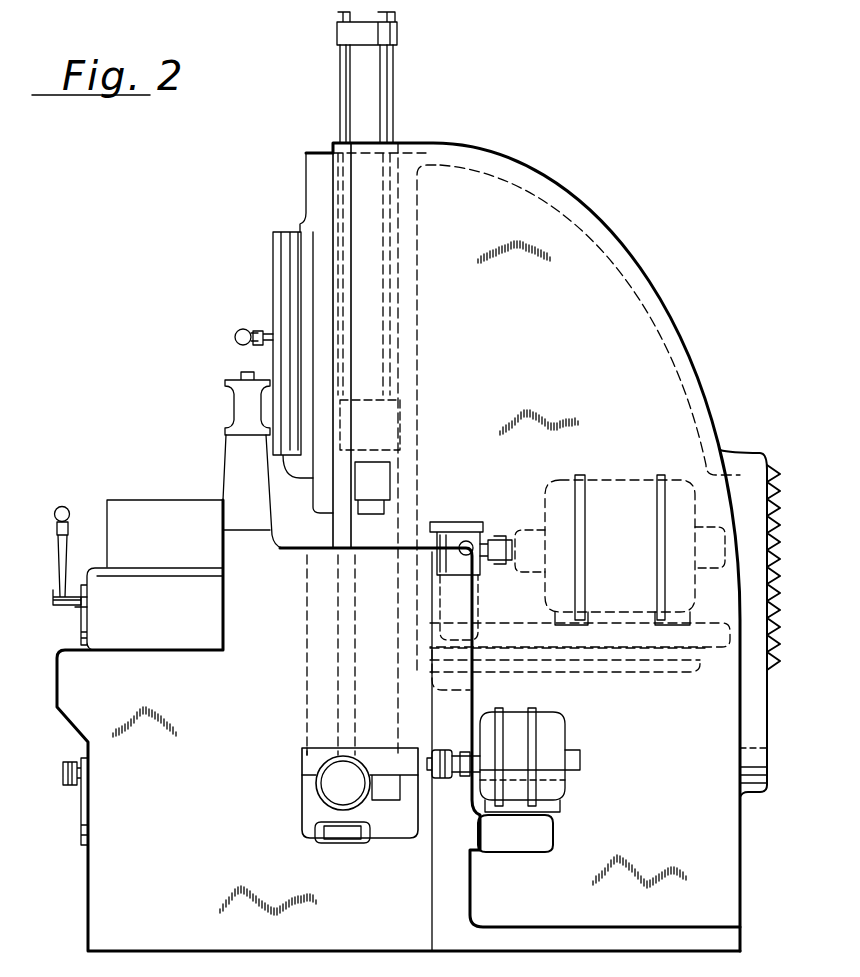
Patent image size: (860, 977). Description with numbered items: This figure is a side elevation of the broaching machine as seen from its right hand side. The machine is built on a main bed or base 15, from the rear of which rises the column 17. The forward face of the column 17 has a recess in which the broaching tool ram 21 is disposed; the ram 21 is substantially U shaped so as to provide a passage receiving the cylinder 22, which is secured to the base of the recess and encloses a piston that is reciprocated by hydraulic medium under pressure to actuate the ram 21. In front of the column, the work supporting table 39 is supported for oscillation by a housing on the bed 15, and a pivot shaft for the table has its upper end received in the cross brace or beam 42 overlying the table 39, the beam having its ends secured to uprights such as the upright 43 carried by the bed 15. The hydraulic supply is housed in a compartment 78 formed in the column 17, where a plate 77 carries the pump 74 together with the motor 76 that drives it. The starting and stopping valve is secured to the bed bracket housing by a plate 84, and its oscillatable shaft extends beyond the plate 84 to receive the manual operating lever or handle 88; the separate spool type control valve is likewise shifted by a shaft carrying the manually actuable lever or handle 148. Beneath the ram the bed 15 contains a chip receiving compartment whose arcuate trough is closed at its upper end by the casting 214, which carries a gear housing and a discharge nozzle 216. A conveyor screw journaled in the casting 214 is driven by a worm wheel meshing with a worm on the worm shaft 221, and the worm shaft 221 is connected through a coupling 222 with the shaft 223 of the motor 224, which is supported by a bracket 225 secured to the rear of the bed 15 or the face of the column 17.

The main bed or base 15 is at (88, 735).
The column 17 is at (604, 233).
The broaching tool ram 21 is at (273, 277).
The cylinder 22 is at (375, 93).
The work supporting table 39 is at (140, 508).
The cross brace or beam 42 is at (233, 400).
The upright 43 is at (236, 462).
The pump 74 is at (470, 528).
The motor 76 is at (640, 470).
The plate 77 is at (713, 652).
The compartment 78 is at (673, 470).
The plate 84 is at (80, 622).
The manual operating lever or handle 88 is at (63, 506).
The manually actuable lever or handle 148 is at (234, 336).
The casting 214 is at (305, 803).
The discharge nozzle 216 is at (345, 836).
The worm shaft 221 is at (302, 764).
The coupling 222 is at (458, 733).
The motor shaft 223 is at (458, 778).
The motor 224 is at (548, 728).
The bracket 225 is at (548, 818).